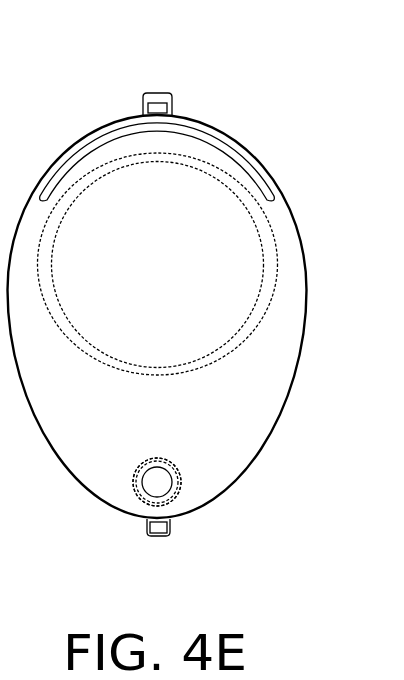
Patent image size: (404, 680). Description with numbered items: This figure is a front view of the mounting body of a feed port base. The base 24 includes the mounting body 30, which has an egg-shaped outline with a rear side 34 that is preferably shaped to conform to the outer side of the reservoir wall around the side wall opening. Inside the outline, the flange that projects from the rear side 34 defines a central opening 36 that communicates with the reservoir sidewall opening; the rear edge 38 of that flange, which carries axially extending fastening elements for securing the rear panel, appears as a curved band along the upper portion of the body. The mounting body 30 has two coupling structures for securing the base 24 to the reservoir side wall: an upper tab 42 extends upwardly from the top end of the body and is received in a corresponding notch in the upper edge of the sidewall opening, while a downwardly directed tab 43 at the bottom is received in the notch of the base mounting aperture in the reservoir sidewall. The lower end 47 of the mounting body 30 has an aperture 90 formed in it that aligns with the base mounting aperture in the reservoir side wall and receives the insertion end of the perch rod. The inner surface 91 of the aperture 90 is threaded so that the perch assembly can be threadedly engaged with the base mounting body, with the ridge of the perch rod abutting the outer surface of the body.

The base 24 is at (194, 316).
The mounting body 30 is at (186, 316).
The rear side 34 is at (128, 435).
The central opening 36 is at (177, 266).
The rear edge 38 is at (287, 183).
The upper tab 42 is at (163, 92).
The downwardly directed tab 43 is at (153, 536).
The lower end 47 is at (192, 488).
The aperture 90 is at (156, 482).
The inner surface 91 is at (182, 500).